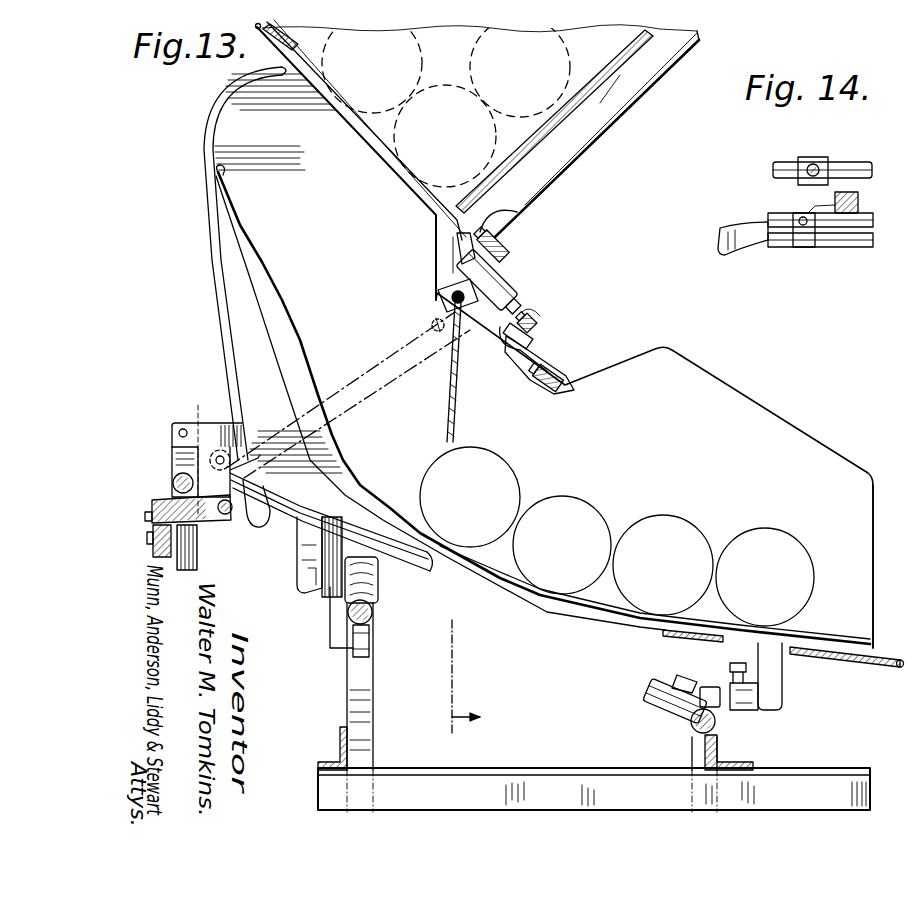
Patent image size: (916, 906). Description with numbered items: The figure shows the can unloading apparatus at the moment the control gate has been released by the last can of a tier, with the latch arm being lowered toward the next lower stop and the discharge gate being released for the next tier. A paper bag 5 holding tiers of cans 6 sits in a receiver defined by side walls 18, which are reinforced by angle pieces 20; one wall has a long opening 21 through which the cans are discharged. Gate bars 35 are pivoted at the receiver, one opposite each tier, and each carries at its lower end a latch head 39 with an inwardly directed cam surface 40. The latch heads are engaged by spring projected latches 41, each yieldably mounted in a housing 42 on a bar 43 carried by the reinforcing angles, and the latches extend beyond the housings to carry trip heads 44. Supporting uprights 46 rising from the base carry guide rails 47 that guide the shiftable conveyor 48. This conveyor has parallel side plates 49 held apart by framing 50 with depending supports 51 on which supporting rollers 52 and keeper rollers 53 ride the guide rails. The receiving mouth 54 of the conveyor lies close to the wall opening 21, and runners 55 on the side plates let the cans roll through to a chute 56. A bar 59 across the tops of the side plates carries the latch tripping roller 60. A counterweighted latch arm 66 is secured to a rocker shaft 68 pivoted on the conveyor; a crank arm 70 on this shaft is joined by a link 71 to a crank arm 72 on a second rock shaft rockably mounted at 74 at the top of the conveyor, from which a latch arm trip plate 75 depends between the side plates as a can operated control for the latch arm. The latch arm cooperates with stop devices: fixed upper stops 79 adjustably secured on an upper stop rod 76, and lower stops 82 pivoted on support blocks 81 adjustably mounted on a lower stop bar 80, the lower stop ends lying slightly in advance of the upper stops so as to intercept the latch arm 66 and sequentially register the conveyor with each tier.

In FIG. 13, the bag 5 is at (600, 52).
In FIG. 13, the cans 6 is at (515, 487).
In FIG. 13, the side walls 18 is at (298, 50).
In FIG. 13, the angle pieces 20 is at (583, 135).
In FIG. 13, the long opening 21 is at (316, 50).
In FIG. 13, the gate bars 35 is at (353, 124).
In FIG. 13, the latch heads 39 is at (455, 236).
In FIG. 13, the cam surface 40 is at (518, 212).
In FIG. 13, the spring projected latches 41 is at (458, 258).
In FIG. 13, the housing 42 is at (520, 290).
In FIG. 13, the bar 43 is at (512, 255).
In FIG. 13, the trip heads 44 is at (540, 318).
In FIG. 13, the supporting uprights 46 is at (375, 682).
In FIG. 13, the guide rails 47 is at (374, 613).
In FIG. 13, the shiftable conveyor 48 is at (778, 410).
In FIG. 13, the side plates 49 is at (816, 452).
In FIG. 13, the framing 50 is at (228, 326).
In FIG. 13, the depending supports 51 is at (298, 567).
In FIG. 13, the supporting rollers 52 is at (358, 582).
In FIG. 13, the keeper rollers 53 is at (372, 652).
In FIG. 13, the receiving mouth 54 is at (392, 176).
In FIG. 13, the runners 55 is at (272, 345).
In FIG. 13, the chute 56 is at (878, 666).
In FIG. 13, the bar 59 is at (560, 365).
In FIG. 13, the latch tripping roller 60 is at (500, 340).
In FIG. 13, the latch arm 66 is at (160, 500).
In FIG. 14, the latch arm 66 is at (860, 196).
In FIG. 13, the rocker shaft 68 is at (225, 515).
In FIG. 13, the crank arm 70 is at (212, 420).
In FIG. 13, the link 71 is at (370, 362).
In FIG. 13, the crank arm 72 is at (432, 326).
In FIG. 13, the rockable mounting 74 is at (438, 294).
In FIG. 13, the latch arm trip plate 75 is at (450, 378).
In FIG. 14, the upper stop rod 76 is at (862, 162).
In FIG. 13, the fixed stops 79 is at (177, 474).
In FIG. 14, the fixed stops 79 is at (815, 163).
In FIG. 14, the lower stop bar 80 is at (858, 247).
In FIG. 14, the support blocks 81 is at (806, 248).
In FIG. 13, the lower stop 82 is at (190, 548).
In FIG. 14, the lower stop 82 is at (812, 210).